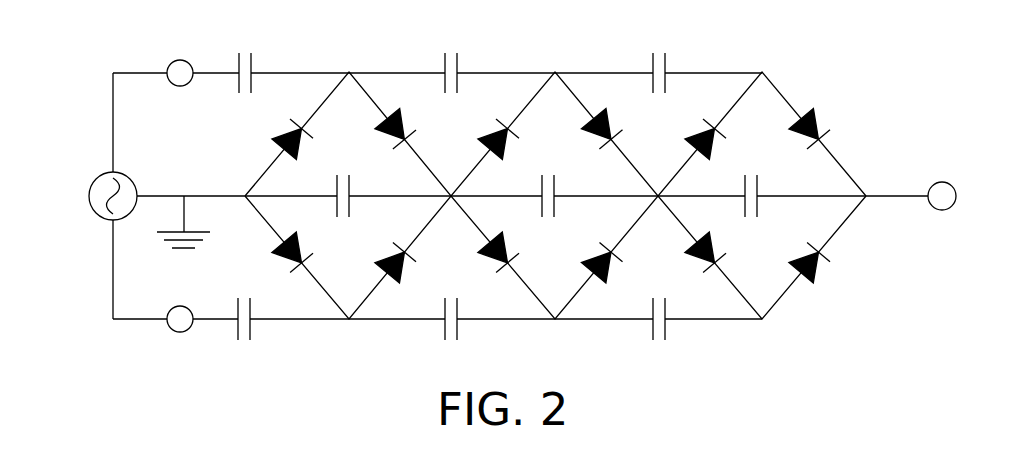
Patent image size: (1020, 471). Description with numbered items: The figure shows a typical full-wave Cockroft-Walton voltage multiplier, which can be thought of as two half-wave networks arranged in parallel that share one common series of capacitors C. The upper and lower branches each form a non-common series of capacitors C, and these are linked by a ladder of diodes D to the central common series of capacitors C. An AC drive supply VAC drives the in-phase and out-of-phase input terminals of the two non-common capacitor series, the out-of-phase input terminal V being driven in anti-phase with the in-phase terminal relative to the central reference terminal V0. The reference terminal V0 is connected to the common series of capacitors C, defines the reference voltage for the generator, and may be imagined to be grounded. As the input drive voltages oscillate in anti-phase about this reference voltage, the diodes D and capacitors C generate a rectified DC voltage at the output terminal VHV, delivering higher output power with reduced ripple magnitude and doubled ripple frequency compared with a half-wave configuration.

The capacitor C is at (498, 196).
The diode D is at (551, 195).
The AC drive supply VAC is at (90, 196).
The reference terminal V0 is at (183, 205).
The out-of-phase input terminal V is at (180, 332).
The output terminal VHV is at (938, 178).